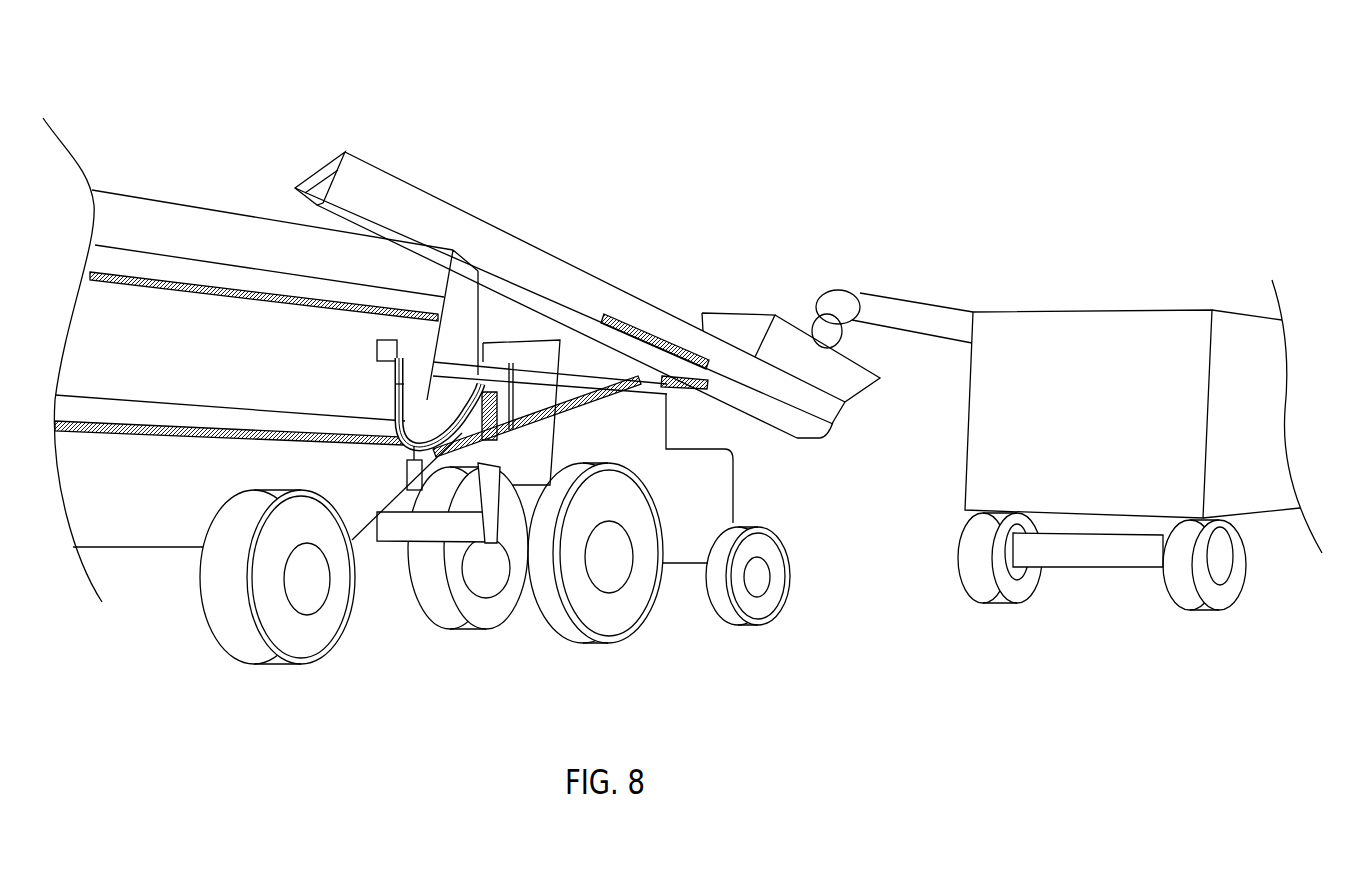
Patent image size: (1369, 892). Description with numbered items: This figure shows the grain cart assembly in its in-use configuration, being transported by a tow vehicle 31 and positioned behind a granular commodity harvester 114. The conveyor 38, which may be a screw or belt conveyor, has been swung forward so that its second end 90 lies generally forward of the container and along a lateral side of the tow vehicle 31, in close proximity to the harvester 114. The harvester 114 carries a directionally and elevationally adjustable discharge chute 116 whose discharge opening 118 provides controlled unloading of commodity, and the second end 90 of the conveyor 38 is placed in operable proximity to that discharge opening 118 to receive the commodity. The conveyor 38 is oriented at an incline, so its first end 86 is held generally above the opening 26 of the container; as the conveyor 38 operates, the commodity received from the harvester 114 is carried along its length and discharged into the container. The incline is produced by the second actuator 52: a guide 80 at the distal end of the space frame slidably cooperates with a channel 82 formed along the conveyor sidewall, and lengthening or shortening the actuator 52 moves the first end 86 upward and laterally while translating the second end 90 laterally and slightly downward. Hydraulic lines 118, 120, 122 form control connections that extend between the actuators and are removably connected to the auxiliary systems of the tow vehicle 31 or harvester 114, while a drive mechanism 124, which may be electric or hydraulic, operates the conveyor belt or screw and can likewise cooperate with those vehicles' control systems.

The opening 26 is at (214, 156).
The tow vehicle 31 is at (725, 503).
The conveyor 38 is at (500, 245).
The second actuator 52 is at (470, 387).
The guide 80 is at (707, 382).
The channel 82 is at (620, 325).
The first end 86 is at (323, 182).
The second end 90 is at (840, 425).
The harvester 114 is at (1260, 430).
The discharge chute 116 is at (907, 305).
The discharge opening 118 is at (393, 383).
The hydraulic line 120 is at (407, 462).
The hydraulic line 122 is at (394, 402).
The drive mechanism 124 is at (365, 442).